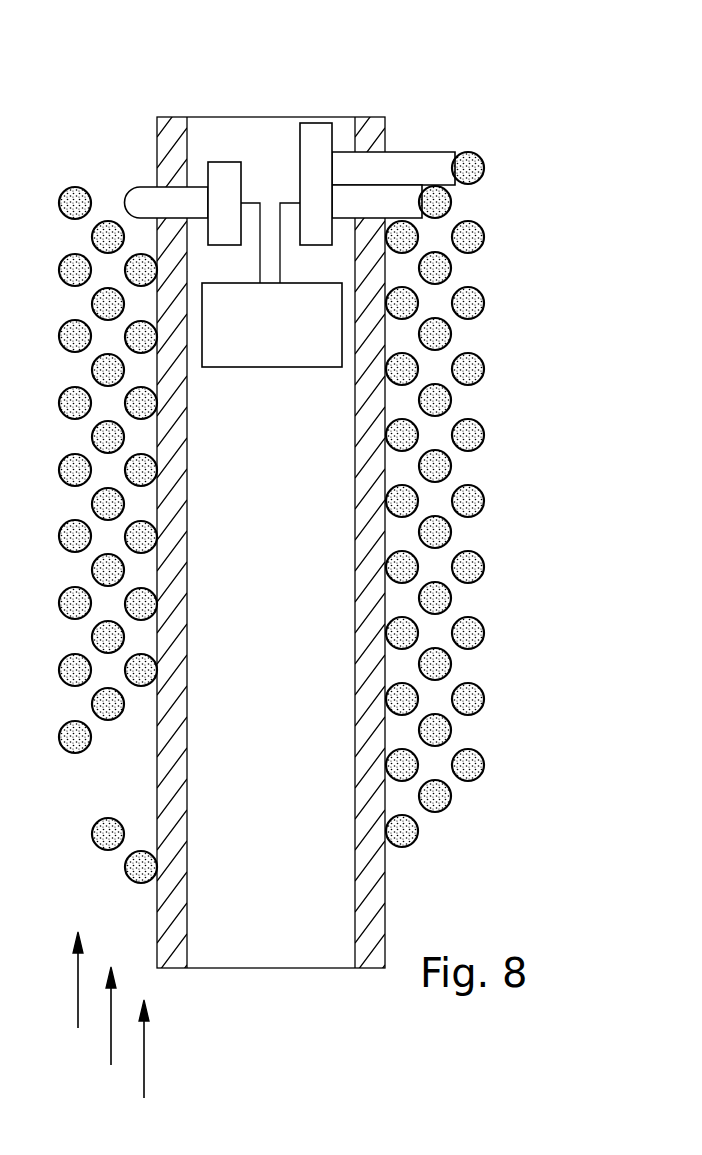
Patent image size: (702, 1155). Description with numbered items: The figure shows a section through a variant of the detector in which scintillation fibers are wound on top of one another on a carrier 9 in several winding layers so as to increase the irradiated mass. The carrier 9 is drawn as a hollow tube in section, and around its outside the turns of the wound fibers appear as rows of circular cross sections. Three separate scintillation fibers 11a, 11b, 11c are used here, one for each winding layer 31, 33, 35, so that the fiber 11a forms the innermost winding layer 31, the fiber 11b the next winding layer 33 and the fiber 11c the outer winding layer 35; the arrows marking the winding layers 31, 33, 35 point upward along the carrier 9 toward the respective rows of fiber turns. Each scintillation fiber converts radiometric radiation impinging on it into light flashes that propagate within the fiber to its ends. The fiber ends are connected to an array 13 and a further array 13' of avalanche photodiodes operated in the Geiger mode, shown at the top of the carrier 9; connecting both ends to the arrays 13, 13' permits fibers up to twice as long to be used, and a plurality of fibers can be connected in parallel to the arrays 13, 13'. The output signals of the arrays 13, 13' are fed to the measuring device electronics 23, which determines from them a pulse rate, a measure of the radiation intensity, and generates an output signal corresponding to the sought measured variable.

The carrier 9 is at (375, 888).
The array of avalanche photodiodes 13 is at (367, 151).
The array of avalanche photodiodes 13' is at (193, 162).
The measuring device electronics 23 is at (291, 340).
The scintillation fiber 11a is at (416, 838).
The scintillation fiber 11b is at (450, 805).
The scintillation fiber 11c is at (483, 768).
The winding layer 31 is at (78, 996).
The winding layer 33 is at (113, 1031).
The winding layer 35 is at (148, 1064).